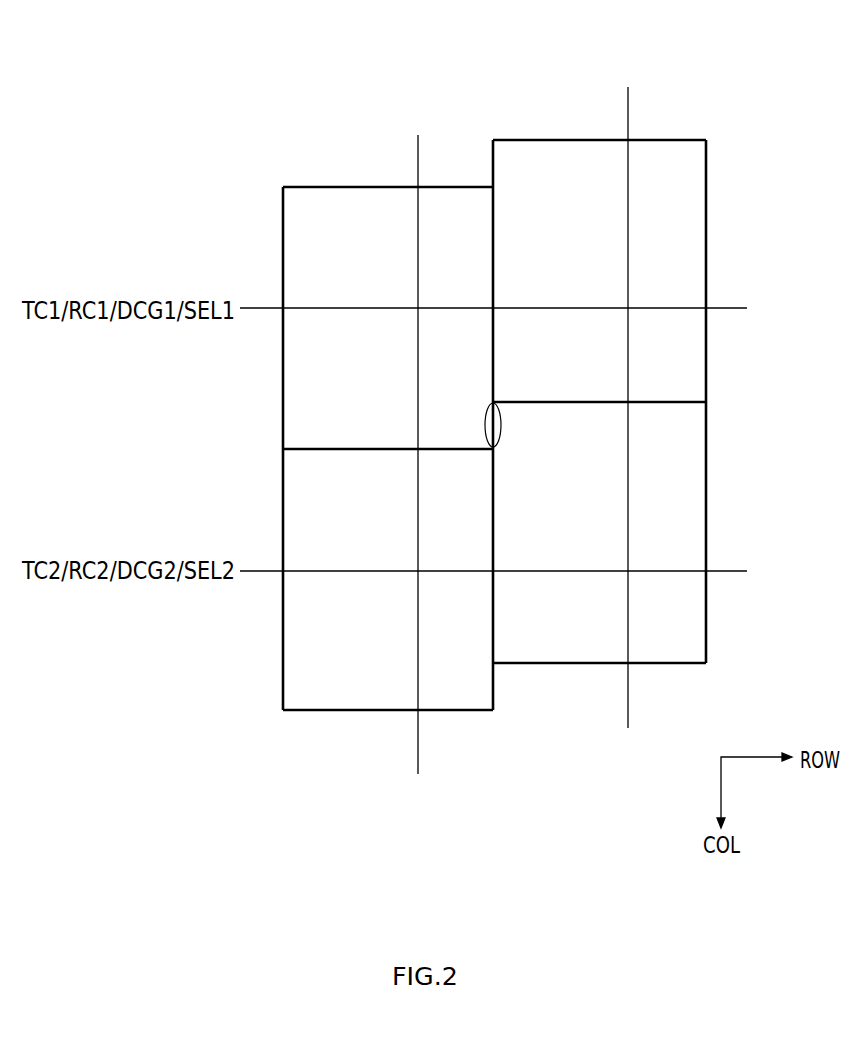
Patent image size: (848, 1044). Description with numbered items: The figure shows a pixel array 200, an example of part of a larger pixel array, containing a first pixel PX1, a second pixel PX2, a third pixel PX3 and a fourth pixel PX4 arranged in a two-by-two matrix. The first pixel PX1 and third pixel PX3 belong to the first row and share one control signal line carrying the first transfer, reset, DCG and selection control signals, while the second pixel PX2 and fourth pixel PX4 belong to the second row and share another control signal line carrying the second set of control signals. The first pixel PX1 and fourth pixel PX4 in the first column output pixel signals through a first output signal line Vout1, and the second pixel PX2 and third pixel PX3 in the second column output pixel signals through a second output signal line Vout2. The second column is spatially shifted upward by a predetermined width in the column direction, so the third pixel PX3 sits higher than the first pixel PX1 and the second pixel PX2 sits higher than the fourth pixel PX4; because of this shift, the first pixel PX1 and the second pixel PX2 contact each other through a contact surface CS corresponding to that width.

The pixel array 200 is at (721, 34).
The first pixel PX1 is at (388, 431).
The second pixel PX2 is at (525, 642).
The third pixel PX3 is at (599, 383).
The fourth pixel PX4 is at (315, 688).
The contact surface CS is at (500, 423).
The first output signal line Vout1 is at (381, 456).
The second output signal line Vout2 is at (591, 408).